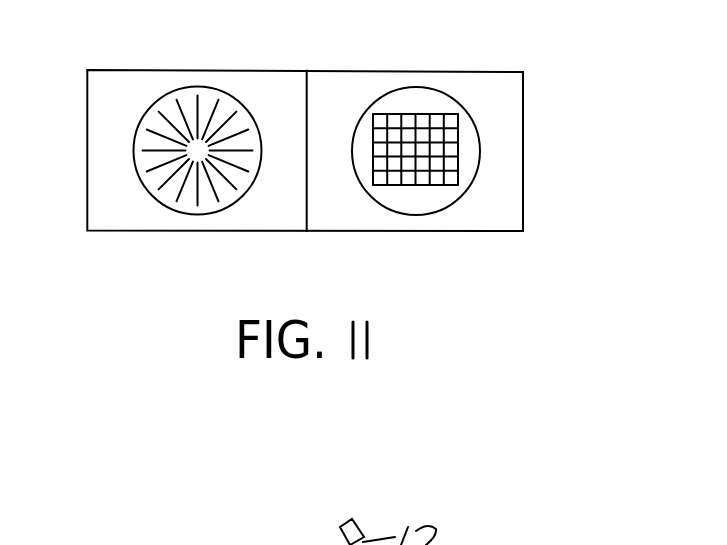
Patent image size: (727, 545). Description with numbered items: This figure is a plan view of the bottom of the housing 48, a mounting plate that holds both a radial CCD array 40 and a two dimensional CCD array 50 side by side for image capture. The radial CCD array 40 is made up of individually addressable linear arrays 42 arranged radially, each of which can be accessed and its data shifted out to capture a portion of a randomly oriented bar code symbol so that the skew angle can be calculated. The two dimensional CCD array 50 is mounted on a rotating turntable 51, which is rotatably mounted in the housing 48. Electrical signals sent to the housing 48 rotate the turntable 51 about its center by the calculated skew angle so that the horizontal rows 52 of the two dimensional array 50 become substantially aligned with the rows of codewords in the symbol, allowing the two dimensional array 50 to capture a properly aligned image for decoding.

The radial CCD array 40 is at (245, 118).
The linear array 42 is at (198, 108).
The housing 48 is at (515, 207).
The two dimensional CCD array 50 is at (397, 113).
The turntable 51 is at (417, 200).
The horizontal rows 52 is at (452, 121).